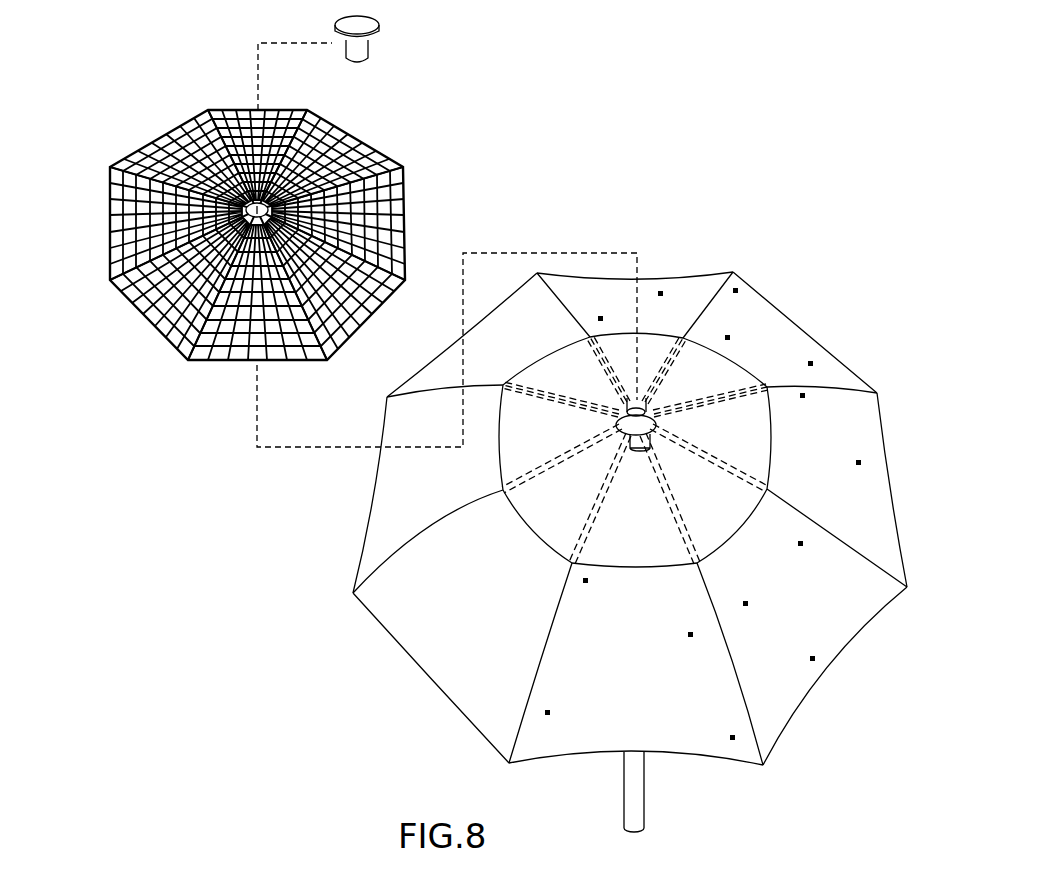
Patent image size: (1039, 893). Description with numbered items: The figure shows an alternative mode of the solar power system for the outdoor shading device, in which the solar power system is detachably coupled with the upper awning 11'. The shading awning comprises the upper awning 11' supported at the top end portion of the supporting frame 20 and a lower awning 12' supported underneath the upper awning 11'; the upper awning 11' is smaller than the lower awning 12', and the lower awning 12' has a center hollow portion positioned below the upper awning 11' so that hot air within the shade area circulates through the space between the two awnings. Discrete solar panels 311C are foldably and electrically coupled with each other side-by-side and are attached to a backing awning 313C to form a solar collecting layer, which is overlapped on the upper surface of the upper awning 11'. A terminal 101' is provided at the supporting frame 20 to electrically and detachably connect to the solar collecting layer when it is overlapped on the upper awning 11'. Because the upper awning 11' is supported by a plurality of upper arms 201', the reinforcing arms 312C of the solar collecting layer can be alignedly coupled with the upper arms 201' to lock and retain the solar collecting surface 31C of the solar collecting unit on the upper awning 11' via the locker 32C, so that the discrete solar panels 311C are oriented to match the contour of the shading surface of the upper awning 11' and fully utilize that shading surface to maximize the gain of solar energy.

The solar collecting surface 31C is at (313, 148).
The discrete solar panels 311C is at (358, 147).
The reinforcing arms 312C is at (402, 200).
The backing awning 313C is at (405, 262).
The locker 32C is at (186, 352).
The supporting frame 20 is at (625, 430).
The upper arms 201' is at (720, 332).
The terminal 101' is at (781, 375).
The upper awning 11' is at (725, 451).
The lower awning 12' is at (686, 518).